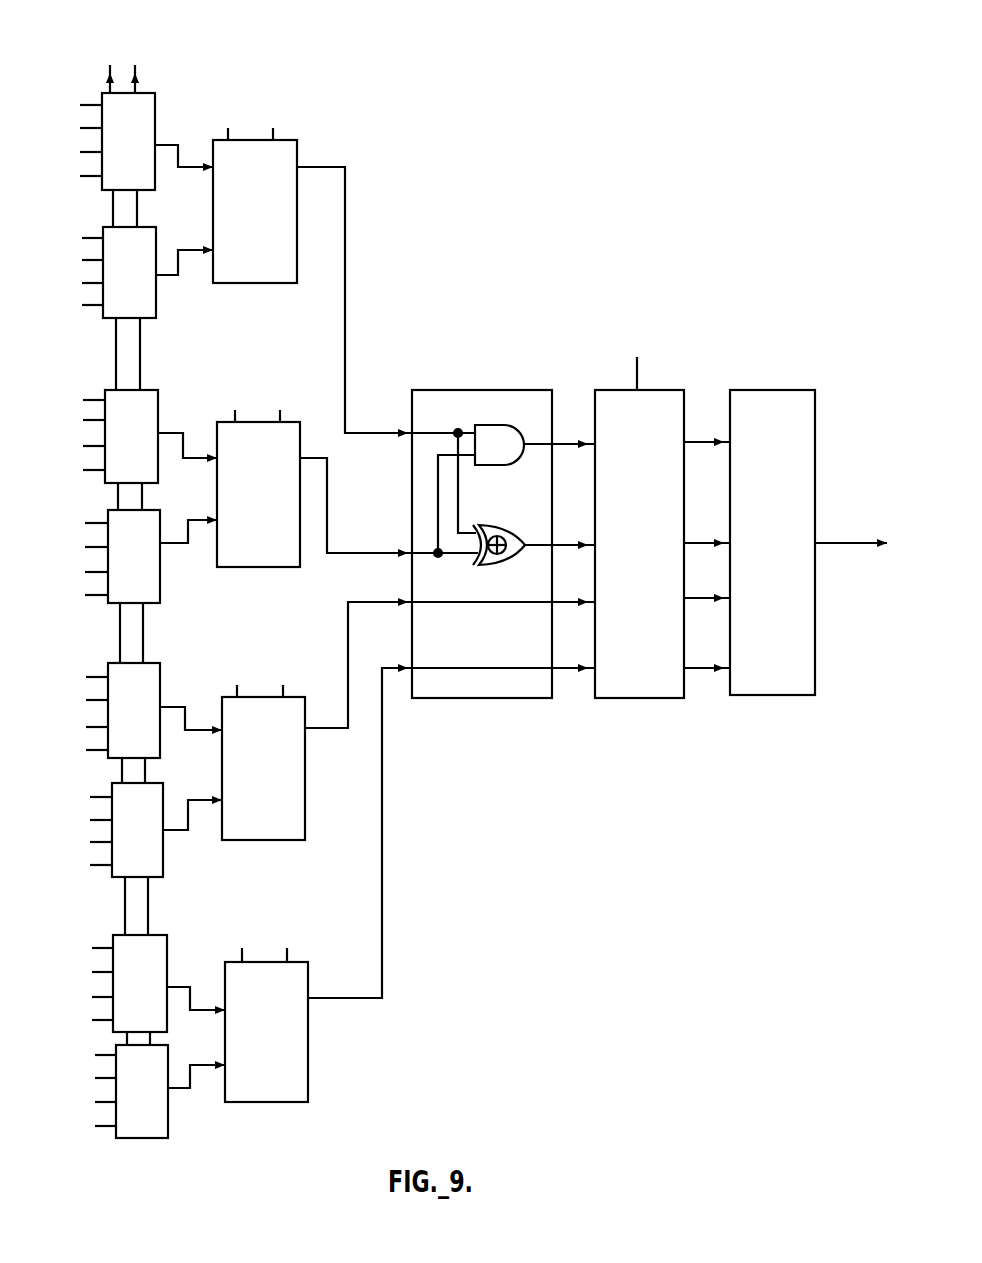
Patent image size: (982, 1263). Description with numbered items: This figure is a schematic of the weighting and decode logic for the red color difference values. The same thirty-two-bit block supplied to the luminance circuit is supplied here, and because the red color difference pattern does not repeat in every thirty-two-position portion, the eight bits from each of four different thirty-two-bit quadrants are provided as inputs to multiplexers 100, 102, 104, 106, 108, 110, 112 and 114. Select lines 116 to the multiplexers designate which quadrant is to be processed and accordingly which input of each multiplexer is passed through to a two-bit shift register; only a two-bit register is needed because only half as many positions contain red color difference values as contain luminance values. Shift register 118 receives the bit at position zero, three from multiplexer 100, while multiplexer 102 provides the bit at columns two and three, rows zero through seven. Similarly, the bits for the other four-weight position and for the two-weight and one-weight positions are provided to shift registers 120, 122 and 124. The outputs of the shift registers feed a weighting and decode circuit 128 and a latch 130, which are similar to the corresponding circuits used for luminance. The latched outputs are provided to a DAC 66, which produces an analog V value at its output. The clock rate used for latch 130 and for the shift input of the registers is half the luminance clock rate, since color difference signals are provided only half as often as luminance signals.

The DAC 66 is at (780, 390).
The multiplexer 100 is at (155, 110).
The multiplexer 102 is at (166, 217).
The multiplexer 104 is at (167, 383).
The multiplexer 106 is at (160, 511).
The multiplexer 108 is at (160, 664).
The multiplexer 110 is at (163, 784).
The multiplexer 112 is at (167, 936).
The multiplexer 114 is at (176, 1036).
The select lines 116 is at (110, 75).
The shift register 118 is at (250, 283).
The shift register 120 is at (258, 567).
The shift register 122 is at (265, 840).
The shift register 124 is at (277, 1102).
The weighting and decode circuit 128 is at (512, 390).
The latch 130 is at (657, 390).